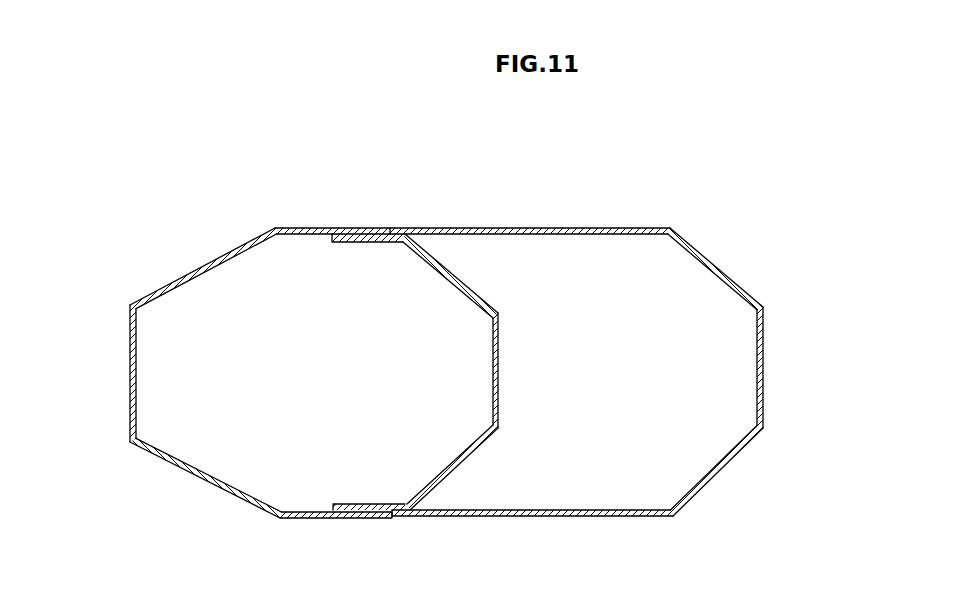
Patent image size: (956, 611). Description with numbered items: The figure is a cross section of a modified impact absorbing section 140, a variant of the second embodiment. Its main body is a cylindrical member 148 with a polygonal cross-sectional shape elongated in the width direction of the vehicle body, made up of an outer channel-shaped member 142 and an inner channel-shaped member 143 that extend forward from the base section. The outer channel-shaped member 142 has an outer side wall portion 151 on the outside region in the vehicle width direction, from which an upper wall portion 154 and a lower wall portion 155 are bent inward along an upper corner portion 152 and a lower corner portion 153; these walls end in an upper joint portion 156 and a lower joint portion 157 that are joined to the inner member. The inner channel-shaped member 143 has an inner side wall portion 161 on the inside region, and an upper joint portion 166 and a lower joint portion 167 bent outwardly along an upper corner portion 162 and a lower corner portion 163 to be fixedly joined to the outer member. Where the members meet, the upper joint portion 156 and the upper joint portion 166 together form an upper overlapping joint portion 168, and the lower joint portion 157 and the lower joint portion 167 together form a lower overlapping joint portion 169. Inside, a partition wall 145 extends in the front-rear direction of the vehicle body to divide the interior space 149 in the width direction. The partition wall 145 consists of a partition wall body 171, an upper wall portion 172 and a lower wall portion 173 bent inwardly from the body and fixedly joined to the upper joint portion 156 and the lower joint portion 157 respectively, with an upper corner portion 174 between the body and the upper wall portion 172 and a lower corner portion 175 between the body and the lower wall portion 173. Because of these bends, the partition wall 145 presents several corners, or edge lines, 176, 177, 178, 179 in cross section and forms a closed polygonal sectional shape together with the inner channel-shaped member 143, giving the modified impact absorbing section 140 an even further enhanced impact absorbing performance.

The modified impact absorbing section 140 is at (163, 70).
The cylindrical member 148 is at (398, 100).
The inner channel-shaped member 143 is at (250, 230).
The outer channel-shaped member 142 is at (455, 213).
The upper corner portion 162 is at (185, 276).
The inner side wall portion 161 is at (128, 370).
The lower corner portion 163 is at (192, 480).
The upper joint portion 156 is at (292, 237).
The lower joint portion 157 is at (287, 511).
The upper wall portion 154 is at (567, 229).
The lower wall portion 155 is at (580, 516).
The upper corner portion 152 is at (710, 262).
The outer side wall portion 151 is at (765, 363).
The lower corner portion 153 is at (723, 463).
The upper joint portion 166 is at (322, 243).
The lower joint portion 167 is at (333, 504).
The upper overlapping joint portion 168 is at (385, 308).
The lower overlapping joint portion 169 is at (390, 435).
The upper wall portion 172 is at (382, 243).
The partition wall body 171 is at (503, 352).
The lower corner portion 175 is at (470, 455).
The lower wall portion 173 is at (373, 507).
The upper corner portion 174 is at (463, 283).
The corner (edge line) 176 is at (407, 230).
The corner (edge line) 177 is at (410, 517).
The corner (edge line) 178 is at (498, 317).
The corner (edge line) 179 is at (498, 430).
The interior space 149 is at (620, 267).
The partition wall (bulkhead) 145 is at (512, 387).